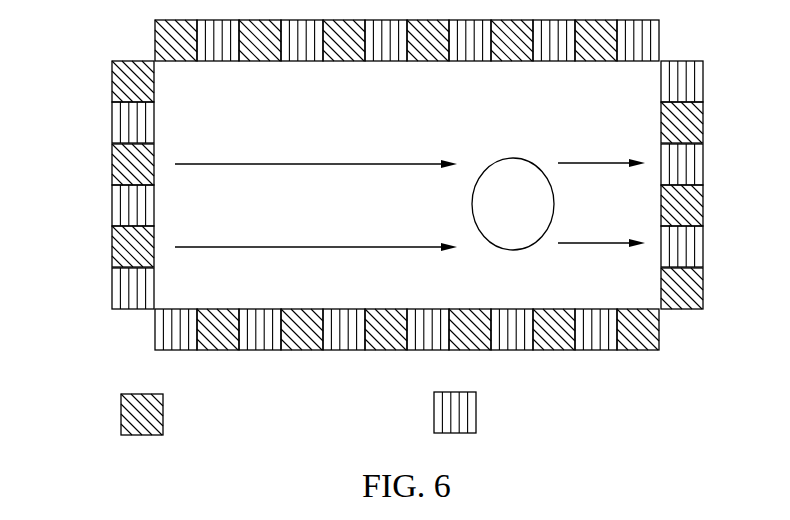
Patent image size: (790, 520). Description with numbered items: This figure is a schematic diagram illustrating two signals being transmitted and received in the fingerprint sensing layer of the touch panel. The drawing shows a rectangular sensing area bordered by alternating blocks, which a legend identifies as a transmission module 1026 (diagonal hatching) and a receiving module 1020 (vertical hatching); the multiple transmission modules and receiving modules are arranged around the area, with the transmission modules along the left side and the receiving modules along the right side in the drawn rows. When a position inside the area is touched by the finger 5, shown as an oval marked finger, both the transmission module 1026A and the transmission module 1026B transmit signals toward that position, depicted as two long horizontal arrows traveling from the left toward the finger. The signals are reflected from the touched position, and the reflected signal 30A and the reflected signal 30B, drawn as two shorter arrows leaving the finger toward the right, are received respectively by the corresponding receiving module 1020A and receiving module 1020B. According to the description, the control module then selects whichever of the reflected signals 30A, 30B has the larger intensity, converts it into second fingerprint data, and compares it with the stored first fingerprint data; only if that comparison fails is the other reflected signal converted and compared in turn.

The finger 5 is at (511, 158).
The reflected signal 30A is at (588, 163).
The reflected signal 30B is at (588, 243).
The transmission module 1026A is at (88, 164).
The transmission module 1026B is at (90, 246).
The receiving module 1020A is at (725, 164).
The receiving module 1020B is at (721, 246).
The transmission module 1026 is at (254, 414).
The receiving module 1020 is at (555, 412).